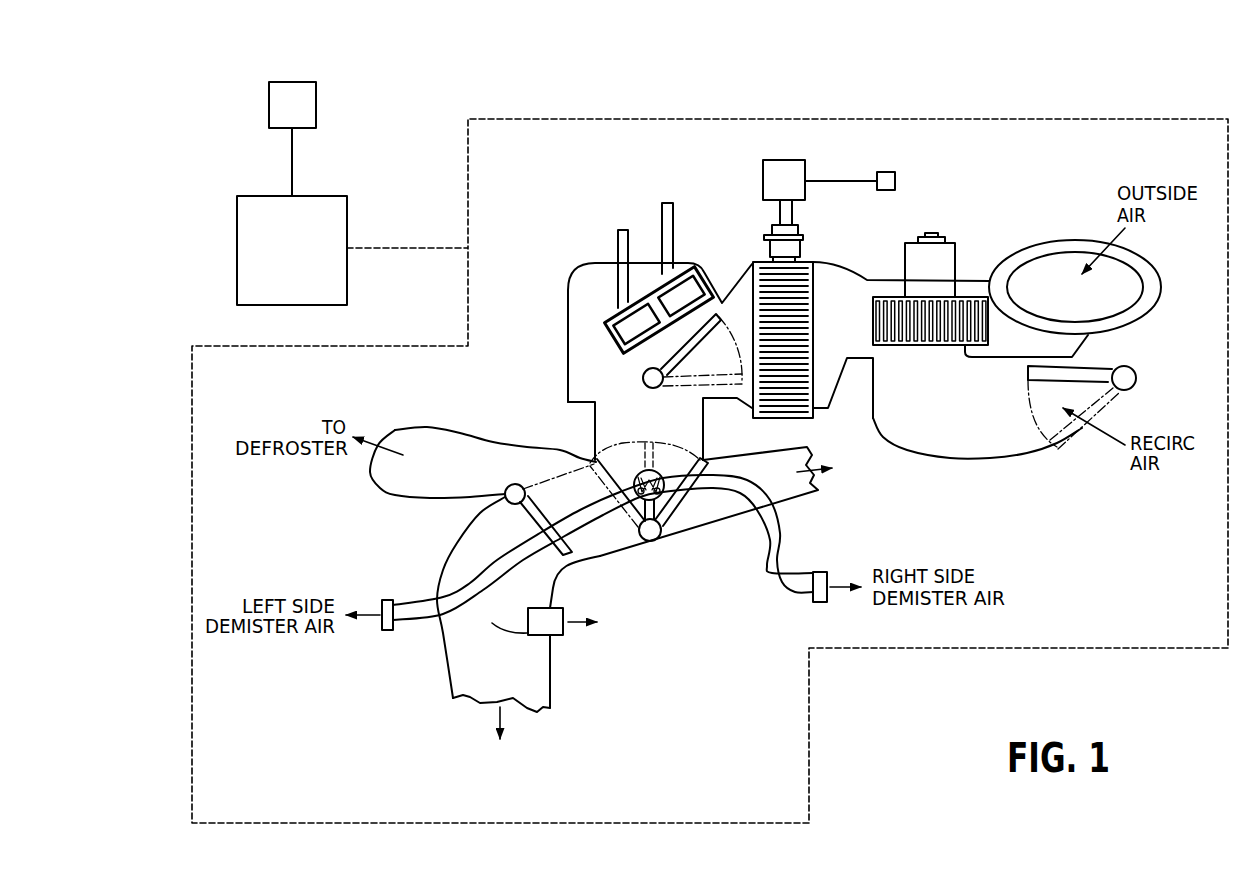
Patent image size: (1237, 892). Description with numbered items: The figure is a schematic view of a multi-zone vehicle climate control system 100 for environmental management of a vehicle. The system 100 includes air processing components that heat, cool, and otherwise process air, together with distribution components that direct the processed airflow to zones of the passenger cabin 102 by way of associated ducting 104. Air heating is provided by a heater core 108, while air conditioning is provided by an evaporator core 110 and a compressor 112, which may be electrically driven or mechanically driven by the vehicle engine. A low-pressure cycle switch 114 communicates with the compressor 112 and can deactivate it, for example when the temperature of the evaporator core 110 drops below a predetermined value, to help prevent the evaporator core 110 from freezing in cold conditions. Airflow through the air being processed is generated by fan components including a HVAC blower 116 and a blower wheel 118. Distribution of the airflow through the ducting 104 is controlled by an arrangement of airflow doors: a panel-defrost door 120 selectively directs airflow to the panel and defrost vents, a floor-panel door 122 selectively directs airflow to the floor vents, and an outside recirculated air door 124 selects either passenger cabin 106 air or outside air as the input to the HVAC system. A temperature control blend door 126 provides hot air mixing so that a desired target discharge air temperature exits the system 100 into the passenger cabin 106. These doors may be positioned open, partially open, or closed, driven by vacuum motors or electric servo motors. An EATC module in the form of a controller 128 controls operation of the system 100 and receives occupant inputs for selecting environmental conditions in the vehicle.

The multi-zone vehicle climate control system 100 is at (414, 114).
The passenger cabin 102 is at (536, 653).
The ducting 104 is at (797, 493).
The passenger cabin 106 is at (610, 342).
The heater core 108 is at (773, 290).
The evaporator core 110 is at (763, 175).
The compressor 112 is at (896, 178).
The low-pressure cycle switch 114 is at (912, 258).
The HVAC blower 116 is at (893, 312).
The blower wheel 118 is at (560, 492).
The panel-defrost door 120 is at (670, 507).
The floor-panel door 122 is at (1113, 395).
The outside recirculated air door 124 is at (643, 380).
The temperature control blend door 126 is at (250, 196).
The controller 128 is at (283, 82).